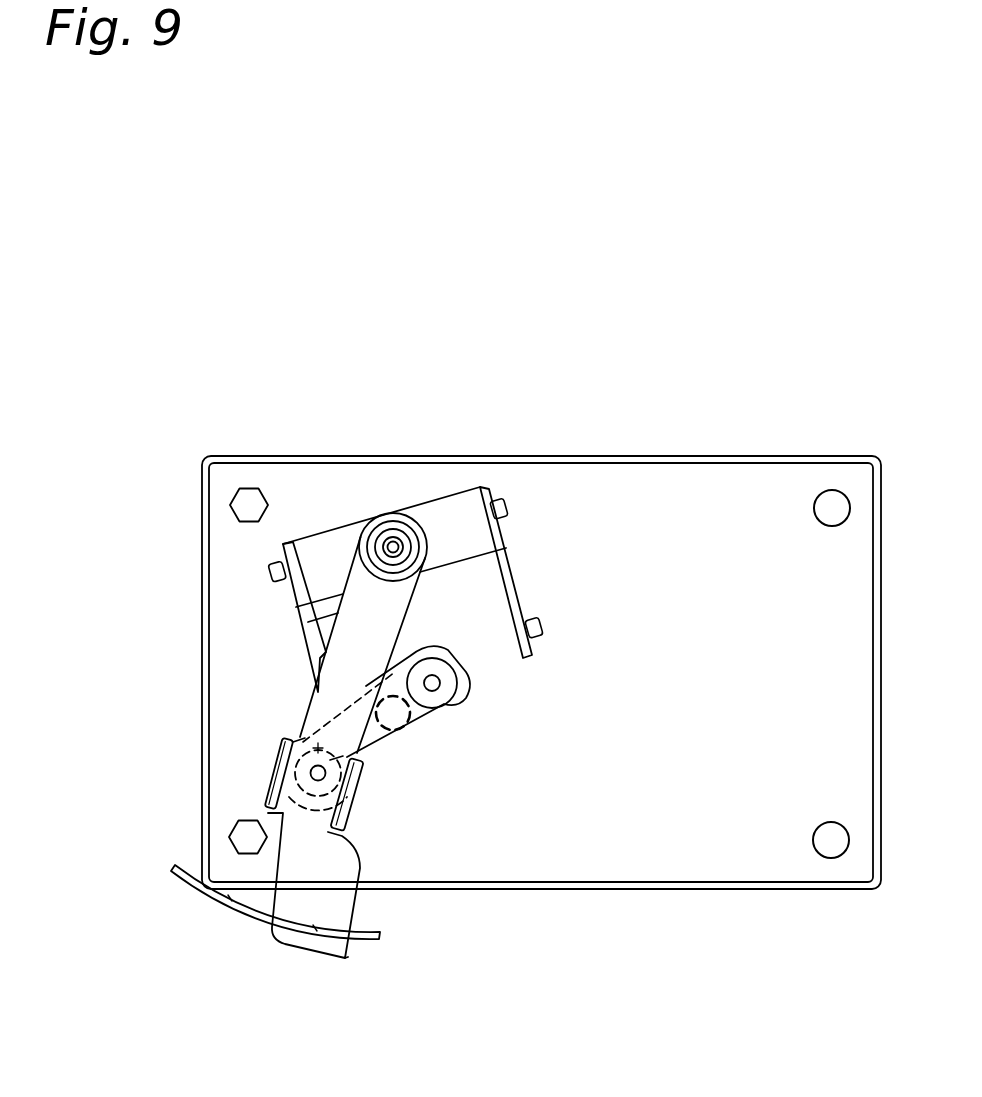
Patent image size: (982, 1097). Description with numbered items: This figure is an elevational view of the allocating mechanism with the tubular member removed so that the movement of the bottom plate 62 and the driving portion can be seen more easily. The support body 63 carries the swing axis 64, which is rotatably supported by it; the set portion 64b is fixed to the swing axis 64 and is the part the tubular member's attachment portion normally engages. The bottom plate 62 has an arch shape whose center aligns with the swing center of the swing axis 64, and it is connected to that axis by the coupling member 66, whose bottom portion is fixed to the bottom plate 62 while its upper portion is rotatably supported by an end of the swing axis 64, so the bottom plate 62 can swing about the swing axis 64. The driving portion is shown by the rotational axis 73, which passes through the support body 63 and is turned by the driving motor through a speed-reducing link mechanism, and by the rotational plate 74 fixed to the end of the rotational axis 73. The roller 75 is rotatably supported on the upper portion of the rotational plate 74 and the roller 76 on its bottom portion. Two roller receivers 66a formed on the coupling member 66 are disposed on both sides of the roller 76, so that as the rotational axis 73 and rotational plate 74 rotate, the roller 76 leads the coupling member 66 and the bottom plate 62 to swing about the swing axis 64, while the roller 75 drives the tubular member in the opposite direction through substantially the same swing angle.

The bottom plate 62 is at (252, 922).
The support body 63 is at (640, 498).
The swing axis 64 is at (392, 540).
The set portion 64b is at (443, 505).
The coupling member 66 is at (326, 622).
The roller receivers 66a is at (270, 790).
The rotational axis 73 is at (405, 726).
The rotational plate 74 is at (472, 702).
The roller 75 is at (446, 668).
The roller 76 is at (318, 745).